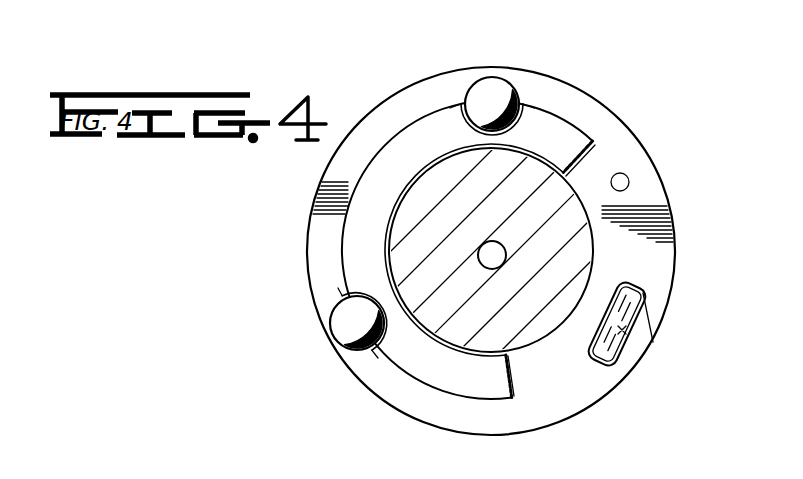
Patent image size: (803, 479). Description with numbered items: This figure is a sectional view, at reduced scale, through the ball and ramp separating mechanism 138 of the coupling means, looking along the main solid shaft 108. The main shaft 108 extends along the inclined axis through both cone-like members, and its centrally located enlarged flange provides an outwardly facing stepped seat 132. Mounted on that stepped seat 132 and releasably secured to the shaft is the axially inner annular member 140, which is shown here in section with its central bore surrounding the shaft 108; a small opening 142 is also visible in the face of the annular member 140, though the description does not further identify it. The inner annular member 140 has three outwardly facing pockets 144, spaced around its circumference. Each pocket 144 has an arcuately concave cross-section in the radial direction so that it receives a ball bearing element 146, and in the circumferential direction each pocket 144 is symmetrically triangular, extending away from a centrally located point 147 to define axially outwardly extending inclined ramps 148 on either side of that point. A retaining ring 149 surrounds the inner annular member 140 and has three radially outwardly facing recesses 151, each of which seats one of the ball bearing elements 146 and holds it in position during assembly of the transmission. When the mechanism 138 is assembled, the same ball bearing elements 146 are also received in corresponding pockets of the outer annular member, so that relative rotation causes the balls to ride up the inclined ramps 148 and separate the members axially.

The main solid shaft 108 is at (524, 328).
The stepped seat 132 is at (568, 334).
The ball and ramp separating mechanism 138 is at (318, 232).
The axially inner annular member 140 is at (628, 148).
The hole 142 is at (620, 182).
The pocket 144 is at (643, 290).
The ball bearing element 146 is at (340, 333).
The centrally located point 147 is at (624, 331).
The inclined ramp 148 is at (633, 303).
The retaining ring 149 is at (347, 263).
The radially outwardly facing recess 151 is at (466, 122).